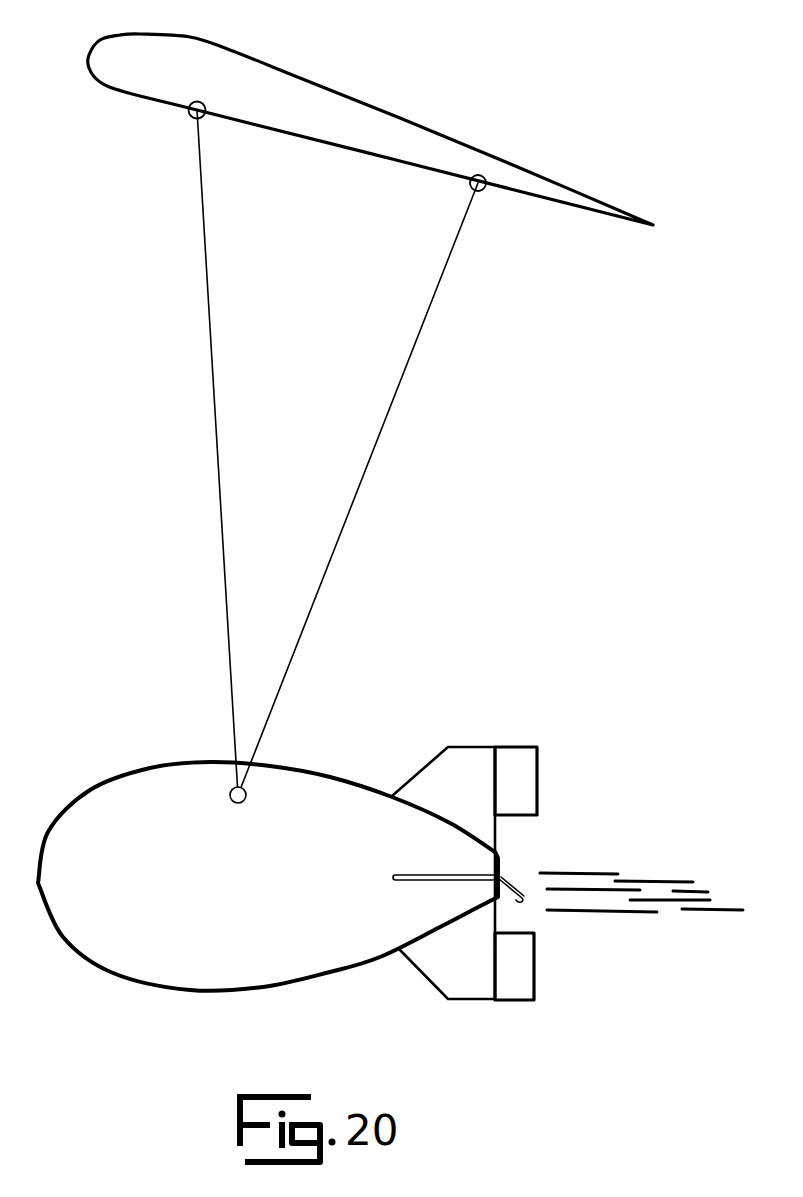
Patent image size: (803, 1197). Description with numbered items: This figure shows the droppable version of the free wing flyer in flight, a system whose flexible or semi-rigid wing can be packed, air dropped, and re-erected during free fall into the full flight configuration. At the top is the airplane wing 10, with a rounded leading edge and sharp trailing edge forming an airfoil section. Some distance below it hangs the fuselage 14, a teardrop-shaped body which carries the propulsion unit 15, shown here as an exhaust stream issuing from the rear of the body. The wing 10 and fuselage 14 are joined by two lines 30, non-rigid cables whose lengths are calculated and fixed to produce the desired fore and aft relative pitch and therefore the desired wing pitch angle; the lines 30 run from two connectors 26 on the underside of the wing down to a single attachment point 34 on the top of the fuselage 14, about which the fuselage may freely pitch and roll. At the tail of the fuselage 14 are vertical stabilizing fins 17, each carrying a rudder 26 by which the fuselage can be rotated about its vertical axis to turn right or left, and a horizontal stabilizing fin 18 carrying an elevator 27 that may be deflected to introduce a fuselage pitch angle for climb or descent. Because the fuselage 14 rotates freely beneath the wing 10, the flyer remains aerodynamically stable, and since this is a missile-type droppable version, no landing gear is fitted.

The airplane wing 10 is at (343, 93).
The fuselage 14 is at (130, 955).
The propulsion unit 15 is at (607, 873).
The vertical stabilizing fins 17 is at (470, 757).
The horizontal stabilizing fins 18 is at (420, 883).
The rudder 26 is at (191, 117).
The elevators 27 is at (513, 907).
The lines 30 is at (215, 418).
The attachment points 34 is at (246, 800).